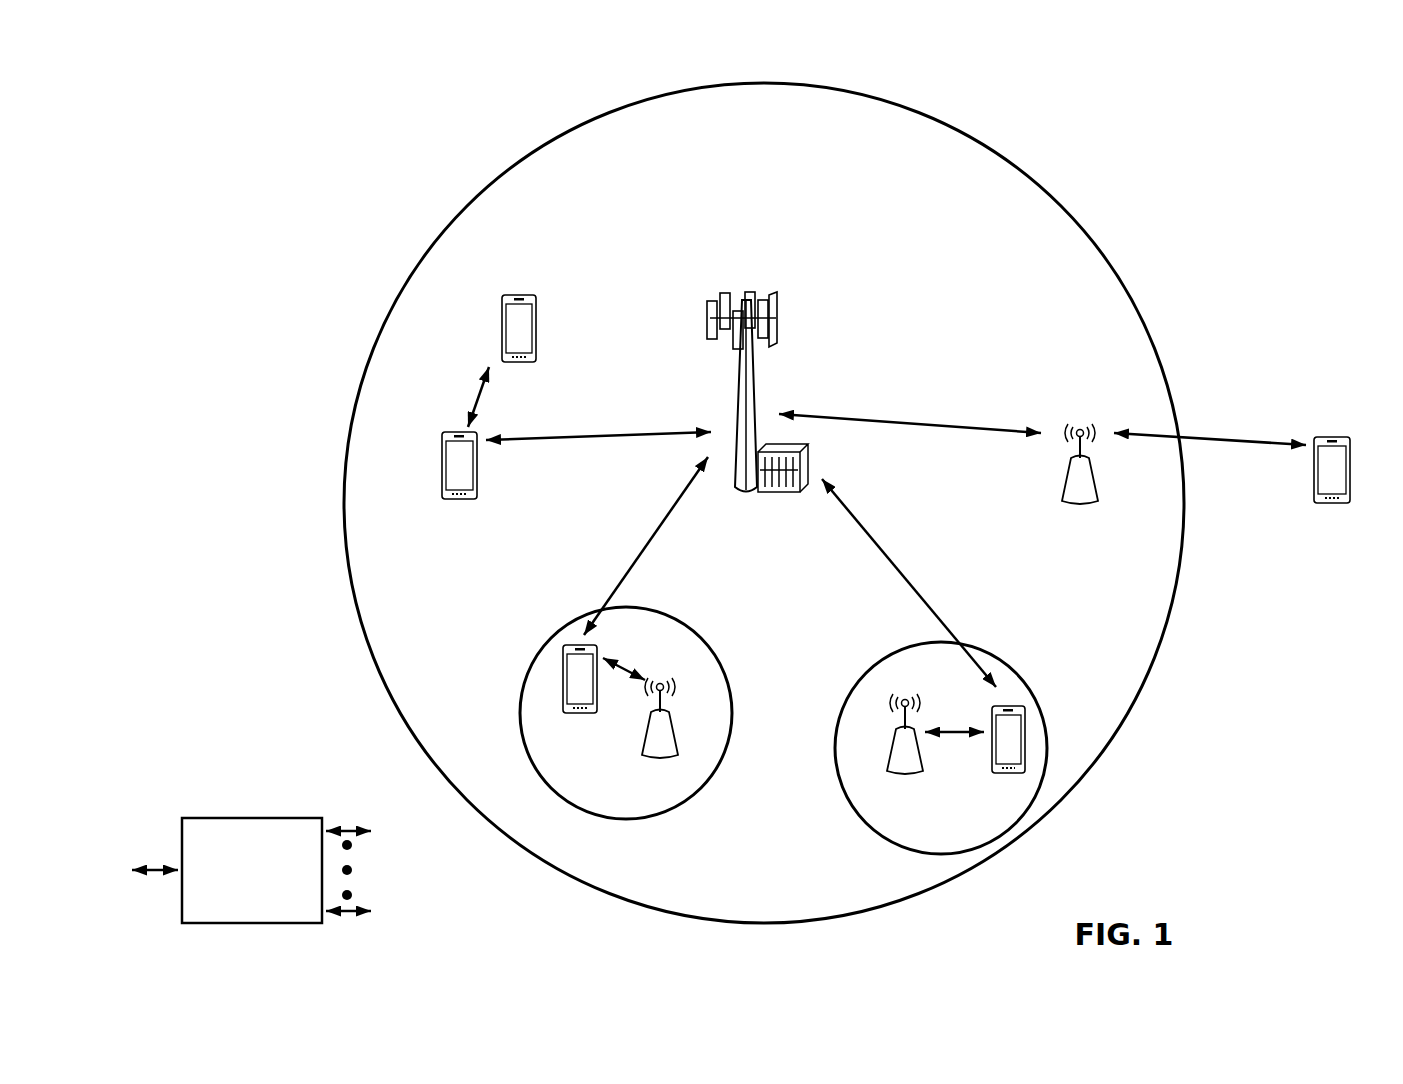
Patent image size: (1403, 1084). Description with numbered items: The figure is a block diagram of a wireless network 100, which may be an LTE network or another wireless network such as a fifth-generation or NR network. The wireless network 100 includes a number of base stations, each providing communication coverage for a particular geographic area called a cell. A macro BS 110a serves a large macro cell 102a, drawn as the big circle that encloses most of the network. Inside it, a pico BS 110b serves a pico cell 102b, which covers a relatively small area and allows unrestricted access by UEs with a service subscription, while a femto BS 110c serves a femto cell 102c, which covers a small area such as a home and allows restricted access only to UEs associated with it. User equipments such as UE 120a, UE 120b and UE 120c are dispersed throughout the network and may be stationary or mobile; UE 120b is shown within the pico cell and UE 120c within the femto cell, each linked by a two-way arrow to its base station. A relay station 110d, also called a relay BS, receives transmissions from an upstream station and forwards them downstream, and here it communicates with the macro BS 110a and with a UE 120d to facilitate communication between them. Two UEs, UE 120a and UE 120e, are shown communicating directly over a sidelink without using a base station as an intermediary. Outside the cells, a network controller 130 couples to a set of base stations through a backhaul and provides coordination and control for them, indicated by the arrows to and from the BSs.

The wireless network 100 is at (236, 79).
The macro cell 102a is at (1043, 190).
The pico cell 102b is at (712, 655).
The femto cell 102c is at (878, 660).
The macro BS 110a is at (753, 284).
The pico BS 110b is at (688, 745).
The femto BS 110c is at (888, 757).
The relay station 110d is at (1080, 424).
The UE 120a is at (441, 462).
The UE 120b is at (567, 714).
The UE 120c is at (992, 774).
The UE 120d is at (1340, 436).
The UE 120e is at (501, 312).
The network controller 130 is at (251, 816).